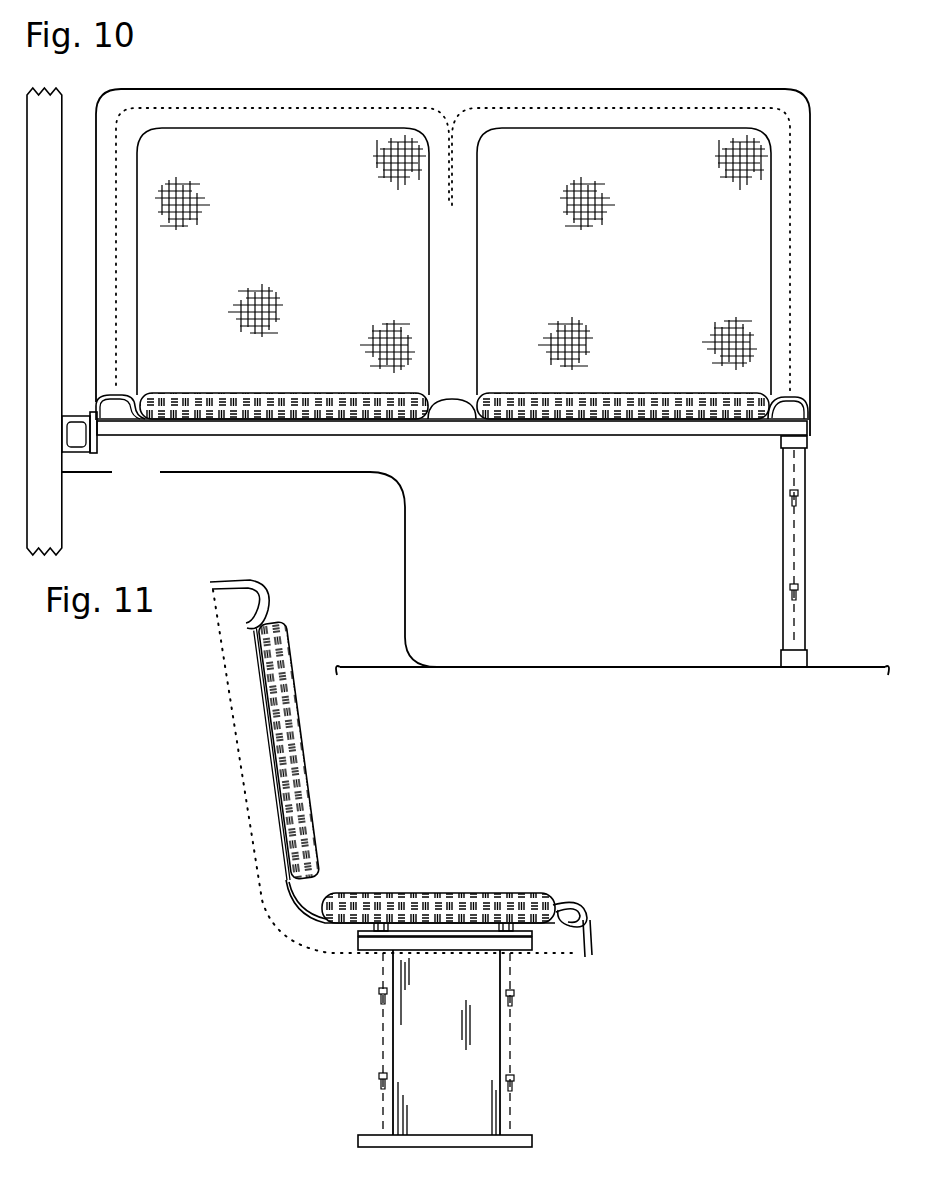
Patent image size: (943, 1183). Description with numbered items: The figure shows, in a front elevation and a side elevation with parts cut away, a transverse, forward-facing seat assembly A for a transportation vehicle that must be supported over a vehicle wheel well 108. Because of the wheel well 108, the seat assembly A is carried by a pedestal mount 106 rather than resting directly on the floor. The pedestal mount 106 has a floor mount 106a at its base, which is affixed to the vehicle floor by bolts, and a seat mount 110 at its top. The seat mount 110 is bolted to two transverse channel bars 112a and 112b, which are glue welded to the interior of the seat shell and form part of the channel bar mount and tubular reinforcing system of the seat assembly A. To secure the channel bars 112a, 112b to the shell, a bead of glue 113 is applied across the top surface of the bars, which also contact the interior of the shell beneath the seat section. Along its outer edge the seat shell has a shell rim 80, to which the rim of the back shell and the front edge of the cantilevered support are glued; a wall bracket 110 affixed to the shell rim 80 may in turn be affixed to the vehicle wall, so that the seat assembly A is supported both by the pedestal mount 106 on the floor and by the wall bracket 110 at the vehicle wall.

In FIG. 10, the seat assembly A is at (812, 192).
In FIG. 10, the shell rim 80 is at (98, 446).
In FIG. 10, the pedestal mount 106 is at (805, 542).
In FIG. 11, the pedestal mount 106 is at (393, 1018).
In FIG. 11, the floor mount 106a is at (528, 1135).
In FIG. 10, the vehicle wheel well 108 is at (380, 573).
In FIG. 10, the seat mount 110 is at (80, 413).
In FIG. 11, the seat mount 110 is at (522, 957).
In FIG. 11, the transverse channel bar 112a is at (360, 933).
In FIG. 10, the transverse channel bar 112b is at (750, 427).
In FIG. 11, the transverse channel bar 112b is at (535, 935).
In FIG. 10, the bead of glue 113 is at (778, 411).